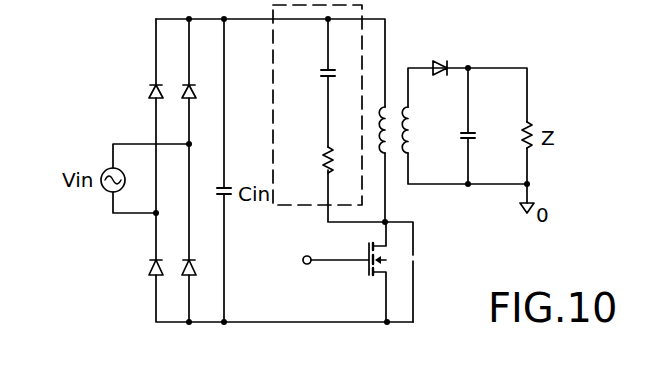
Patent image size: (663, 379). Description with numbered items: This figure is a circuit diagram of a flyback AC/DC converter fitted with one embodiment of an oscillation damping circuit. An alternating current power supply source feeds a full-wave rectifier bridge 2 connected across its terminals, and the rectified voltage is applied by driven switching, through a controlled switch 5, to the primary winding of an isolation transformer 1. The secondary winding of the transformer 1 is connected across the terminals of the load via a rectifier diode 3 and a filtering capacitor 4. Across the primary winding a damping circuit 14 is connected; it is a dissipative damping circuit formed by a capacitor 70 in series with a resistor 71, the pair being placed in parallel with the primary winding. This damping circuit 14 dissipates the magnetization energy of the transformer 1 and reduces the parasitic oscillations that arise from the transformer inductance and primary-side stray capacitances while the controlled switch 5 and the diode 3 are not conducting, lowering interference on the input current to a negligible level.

The transformer 1 is at (395, 72).
The full-wave rectifier bridge 2 is at (187, 83).
The rectifier diode 3 is at (442, 61).
The filtering capacitor 4 is at (476, 136).
The controlled switch 5 is at (366, 268).
The damping circuit 14 is at (271, 78).
The capacitor 70 is at (322, 77).
The resistor 71 is at (319, 164).